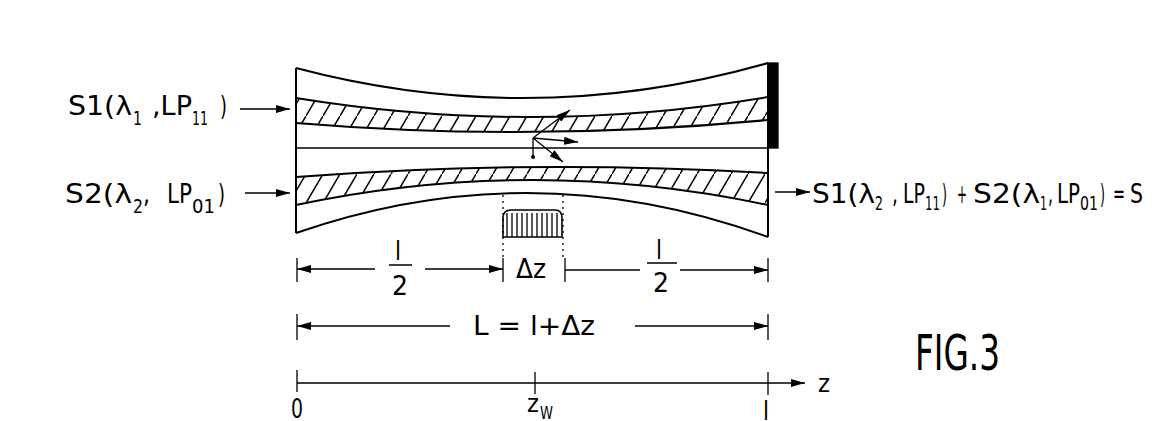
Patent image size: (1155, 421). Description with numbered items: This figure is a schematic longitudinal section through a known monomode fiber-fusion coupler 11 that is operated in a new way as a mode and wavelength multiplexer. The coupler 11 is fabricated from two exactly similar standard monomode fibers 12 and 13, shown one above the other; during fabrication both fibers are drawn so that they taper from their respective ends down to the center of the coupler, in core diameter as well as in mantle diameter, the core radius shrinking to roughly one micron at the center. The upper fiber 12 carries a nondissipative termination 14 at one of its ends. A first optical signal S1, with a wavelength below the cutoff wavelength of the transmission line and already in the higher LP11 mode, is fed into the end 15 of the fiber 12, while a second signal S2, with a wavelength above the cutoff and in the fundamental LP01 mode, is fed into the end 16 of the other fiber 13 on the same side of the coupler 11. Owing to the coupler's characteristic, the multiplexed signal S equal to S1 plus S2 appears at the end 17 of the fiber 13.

The monomode fiber-fusion coupler 11 is at (572, 80).
The fiber 12 is at (370, 95).
The fiber 13 is at (325, 215).
The nondissipative termination 14 is at (781, 70).
The end of the fiber 15 is at (290, 105).
The end of the fiber 16 is at (288, 202).
The end of the fiber 17 is at (770, 202).